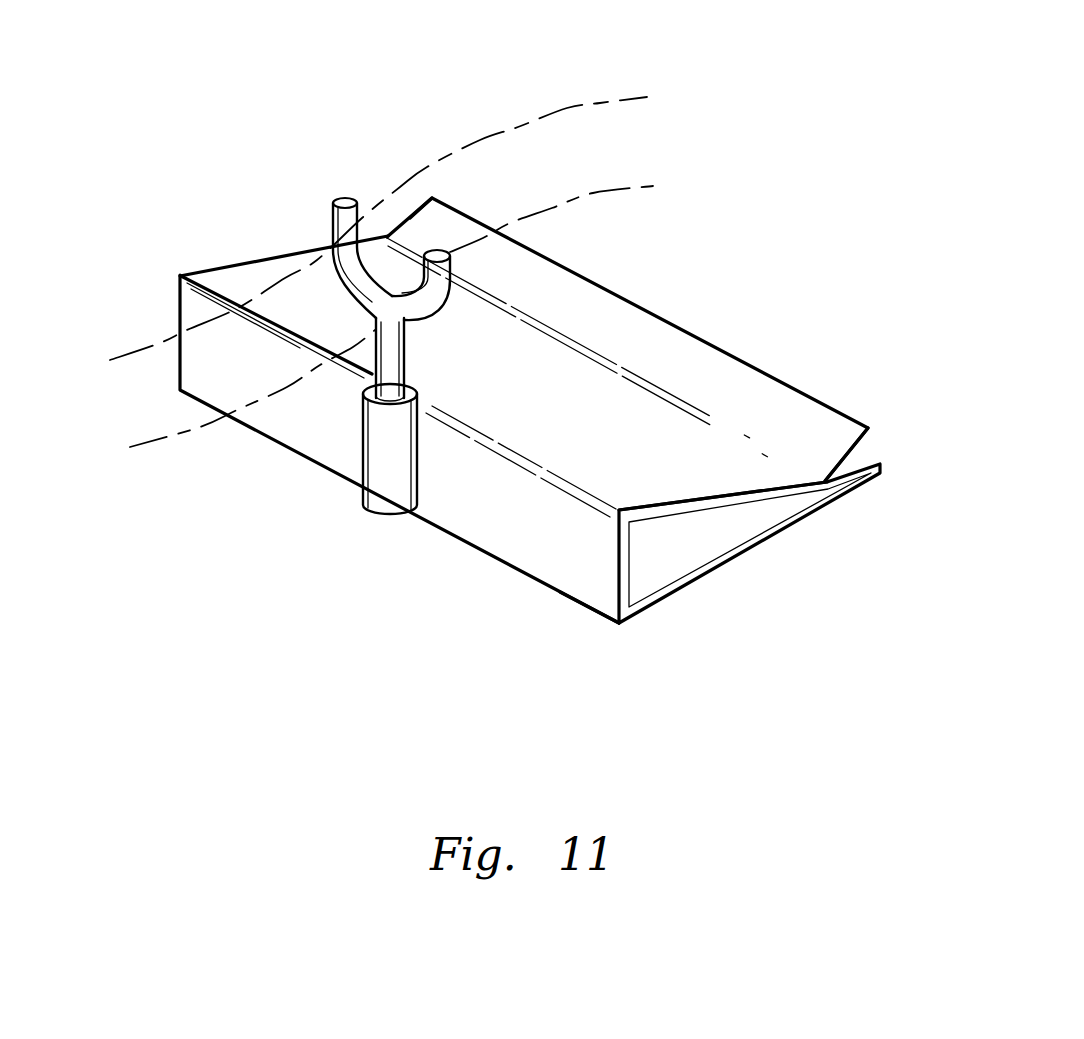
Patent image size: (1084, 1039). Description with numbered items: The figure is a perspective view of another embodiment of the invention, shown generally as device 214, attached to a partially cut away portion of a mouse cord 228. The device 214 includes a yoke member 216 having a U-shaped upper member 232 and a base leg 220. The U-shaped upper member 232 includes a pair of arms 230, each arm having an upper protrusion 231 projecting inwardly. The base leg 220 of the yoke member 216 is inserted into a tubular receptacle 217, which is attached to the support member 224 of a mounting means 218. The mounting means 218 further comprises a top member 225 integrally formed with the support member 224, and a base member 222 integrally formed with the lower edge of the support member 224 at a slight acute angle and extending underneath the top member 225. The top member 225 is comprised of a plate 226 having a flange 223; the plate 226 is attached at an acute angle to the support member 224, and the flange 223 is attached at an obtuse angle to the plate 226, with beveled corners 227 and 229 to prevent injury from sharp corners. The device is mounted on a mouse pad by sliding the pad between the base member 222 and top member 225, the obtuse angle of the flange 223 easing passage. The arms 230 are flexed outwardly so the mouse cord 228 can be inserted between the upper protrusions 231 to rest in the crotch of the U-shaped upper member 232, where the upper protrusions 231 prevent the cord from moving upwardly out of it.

The device 214 is at (146, 295).
The yoke member 216 is at (447, 259).
The tubular receptacle 217 is at (365, 453).
The mounting means 218 is at (617, 626).
The base leg 220 is at (360, 373).
The base member 222 is at (753, 548).
The flange 223 is at (695, 352).
The support member 224 is at (487, 518).
The top member 225 is at (597, 419).
The plate 226 is at (727, 480).
The beveled corner 227 is at (870, 432).
The mouse cord 228 is at (567, 127).
The beveled corner 229 is at (430, 198).
The arm 230 is at (445, 277).
The upper protrusion 231 is at (328, 219).
The U-shaped upper member 232 is at (343, 196).